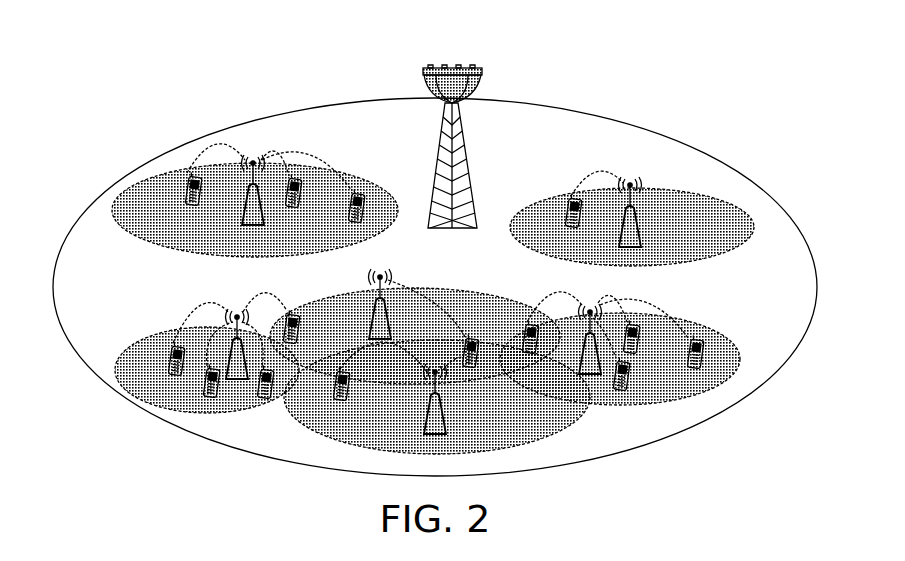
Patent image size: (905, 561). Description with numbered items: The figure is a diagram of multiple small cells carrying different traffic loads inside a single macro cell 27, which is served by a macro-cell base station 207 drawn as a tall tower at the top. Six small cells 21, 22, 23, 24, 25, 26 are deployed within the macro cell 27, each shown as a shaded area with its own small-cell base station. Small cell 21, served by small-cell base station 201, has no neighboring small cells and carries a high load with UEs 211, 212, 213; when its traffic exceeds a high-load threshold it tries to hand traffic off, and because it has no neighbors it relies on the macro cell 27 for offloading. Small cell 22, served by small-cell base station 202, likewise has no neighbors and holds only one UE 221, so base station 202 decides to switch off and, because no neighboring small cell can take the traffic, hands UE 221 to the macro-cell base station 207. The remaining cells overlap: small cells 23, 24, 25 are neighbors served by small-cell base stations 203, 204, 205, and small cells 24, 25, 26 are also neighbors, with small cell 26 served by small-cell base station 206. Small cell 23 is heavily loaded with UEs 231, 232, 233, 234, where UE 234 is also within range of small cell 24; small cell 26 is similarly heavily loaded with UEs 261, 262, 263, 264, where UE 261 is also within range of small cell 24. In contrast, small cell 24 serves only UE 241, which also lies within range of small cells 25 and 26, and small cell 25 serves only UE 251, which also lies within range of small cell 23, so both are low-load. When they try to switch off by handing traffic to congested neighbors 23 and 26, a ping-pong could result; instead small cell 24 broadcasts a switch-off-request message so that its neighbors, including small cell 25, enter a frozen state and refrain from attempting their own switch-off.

The macro cell 27 is at (611, 117).
The macro-cell base station 207 is at (459, 67).
The small cell 21 is at (148, 242).
The small cell 22 is at (719, 259).
The small cell 23 is at (166, 336).
The small cell 24 is at (479, 297).
The small cell 25 is at (580, 418).
The small cell 26 is at (701, 325).
The small-cell base station 201 is at (256, 159).
The small-cell base station 202 is at (629, 178).
The small-cell base station 203 is at (236, 311).
The small-cell base station 204 is at (392, 275).
The small-cell base station 205 is at (433, 369).
The small-cell base station 206 is at (586, 306).
The UE 211 is at (200, 199).
The UE 212 is at (302, 198).
The UE 213 is at (365, 201).
The UE 221 is at (565, 206).
The UE 231 is at (168, 352).
The UE 232 is at (207, 401).
The UE 233 is at (263, 401).
The UE 234 is at (300, 339).
The UE 241 is at (478, 352).
The UE 251 is at (336, 401).
The UE 261 is at (538, 351).
The UE 262 is at (639, 349).
The UE 263 is at (703, 350).
The UE 264 is at (629, 387).